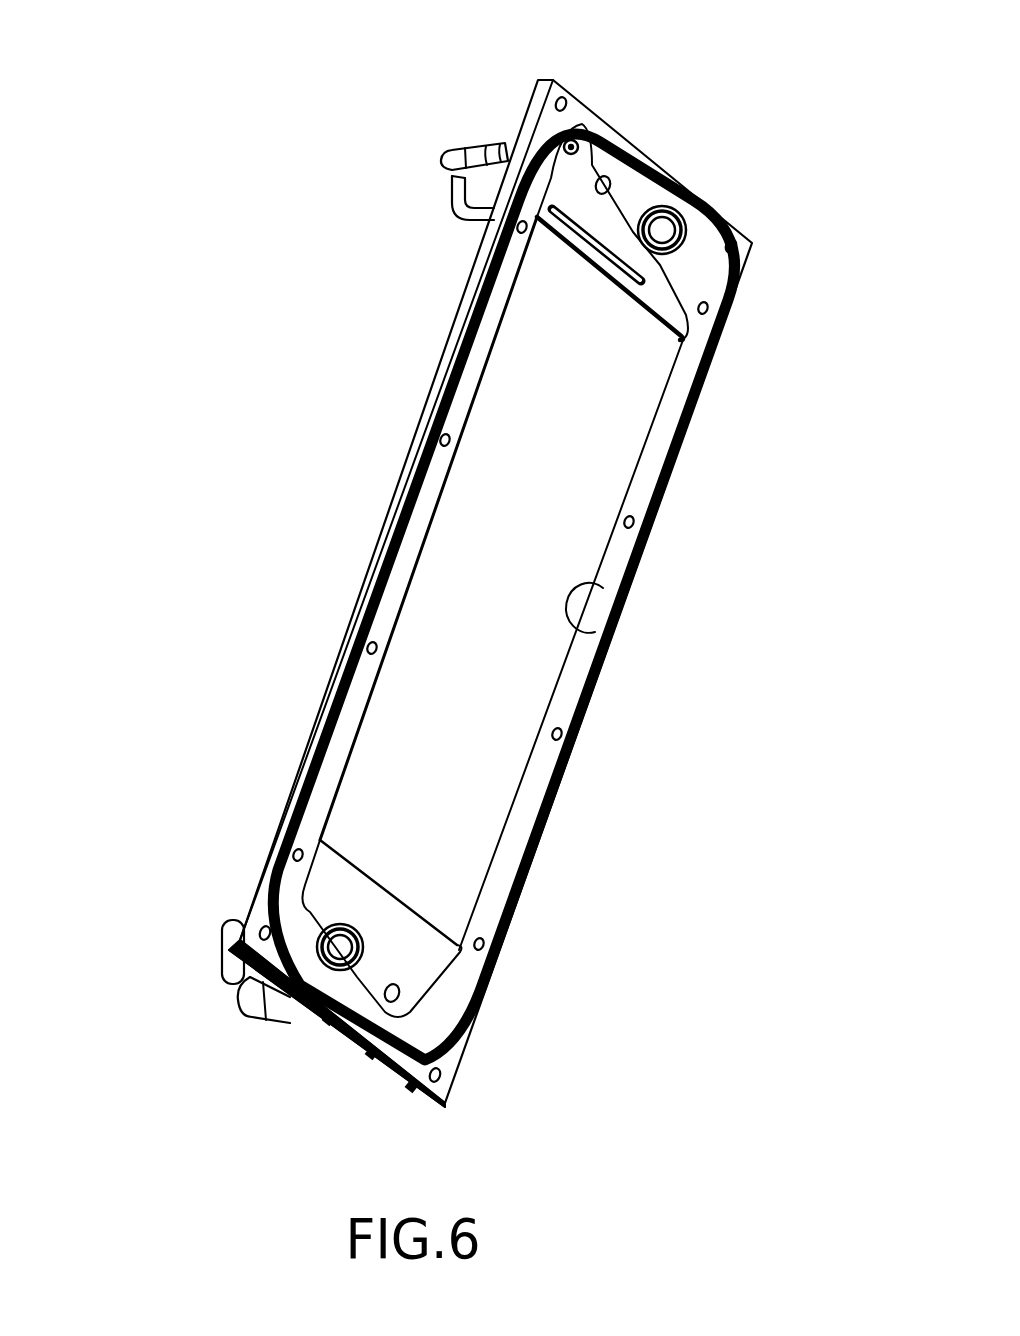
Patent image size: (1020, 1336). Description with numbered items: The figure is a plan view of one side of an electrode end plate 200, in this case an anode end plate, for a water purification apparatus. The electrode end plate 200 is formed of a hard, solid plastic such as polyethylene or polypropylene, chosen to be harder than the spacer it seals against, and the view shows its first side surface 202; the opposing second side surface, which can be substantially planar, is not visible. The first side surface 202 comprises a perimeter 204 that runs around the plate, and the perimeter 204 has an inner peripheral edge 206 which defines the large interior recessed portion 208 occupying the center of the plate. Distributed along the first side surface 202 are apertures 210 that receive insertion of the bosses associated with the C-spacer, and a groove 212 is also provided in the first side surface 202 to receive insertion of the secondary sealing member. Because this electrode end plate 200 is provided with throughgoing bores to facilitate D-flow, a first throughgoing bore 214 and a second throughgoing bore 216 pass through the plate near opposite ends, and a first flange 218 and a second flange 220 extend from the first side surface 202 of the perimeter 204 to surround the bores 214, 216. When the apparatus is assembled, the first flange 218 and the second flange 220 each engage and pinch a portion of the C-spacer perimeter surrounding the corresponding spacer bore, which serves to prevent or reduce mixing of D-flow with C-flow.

The electrode end plate 200 is at (322, 440).
The first side surface 202 is at (569, 698).
The perimeter 204 is at (527, 798).
The inner peripheral edge 206 is at (603, 588).
The interior recessed portion 208 is at (469, 543).
The apertures 210 is at (636, 521).
The groove 212 is at (487, 987).
The first throughgoing bore 214 is at (693, 202).
The second throughgoing bore 216 is at (340, 950).
The first flange 218 is at (670, 225).
The second flange 220 is at (282, 925).